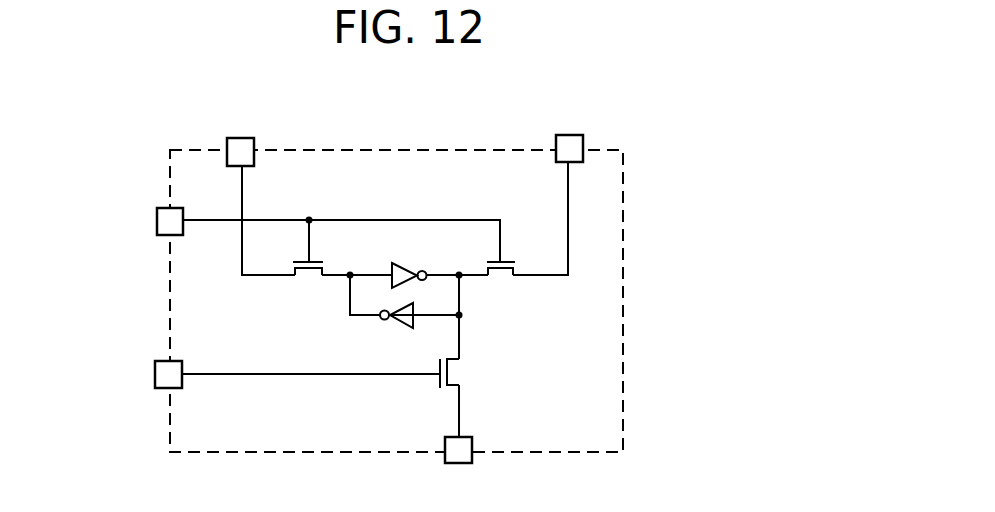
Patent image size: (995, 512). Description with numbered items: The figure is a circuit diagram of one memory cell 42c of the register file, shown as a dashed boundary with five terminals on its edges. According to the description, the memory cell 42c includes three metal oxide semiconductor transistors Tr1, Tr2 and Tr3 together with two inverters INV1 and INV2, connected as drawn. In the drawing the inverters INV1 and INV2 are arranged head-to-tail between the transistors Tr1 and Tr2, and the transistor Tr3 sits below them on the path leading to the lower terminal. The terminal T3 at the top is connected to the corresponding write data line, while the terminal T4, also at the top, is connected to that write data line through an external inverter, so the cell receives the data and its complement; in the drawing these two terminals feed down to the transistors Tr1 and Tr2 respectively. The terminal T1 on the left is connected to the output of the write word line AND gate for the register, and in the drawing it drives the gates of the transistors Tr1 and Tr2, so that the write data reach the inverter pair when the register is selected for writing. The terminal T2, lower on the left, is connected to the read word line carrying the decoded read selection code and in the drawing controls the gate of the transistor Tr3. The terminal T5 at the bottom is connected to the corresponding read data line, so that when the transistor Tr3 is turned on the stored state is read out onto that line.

The terminal T1 is at (170, 207).
The terminal T2 is at (150, 420).
The terminal T3 is at (229, 140).
The terminal T4 is at (598, 103).
The terminal T5 is at (497, 482).
The MOS transistor Tr1 is at (310, 270).
The MOS transistor Tr2 is at (500, 270).
The MOS transistor Tr3 is at (461, 377).
The inverter INV1 is at (412, 263).
The inverter INV2 is at (403, 330).
The memory cell 42c is at (624, 318).